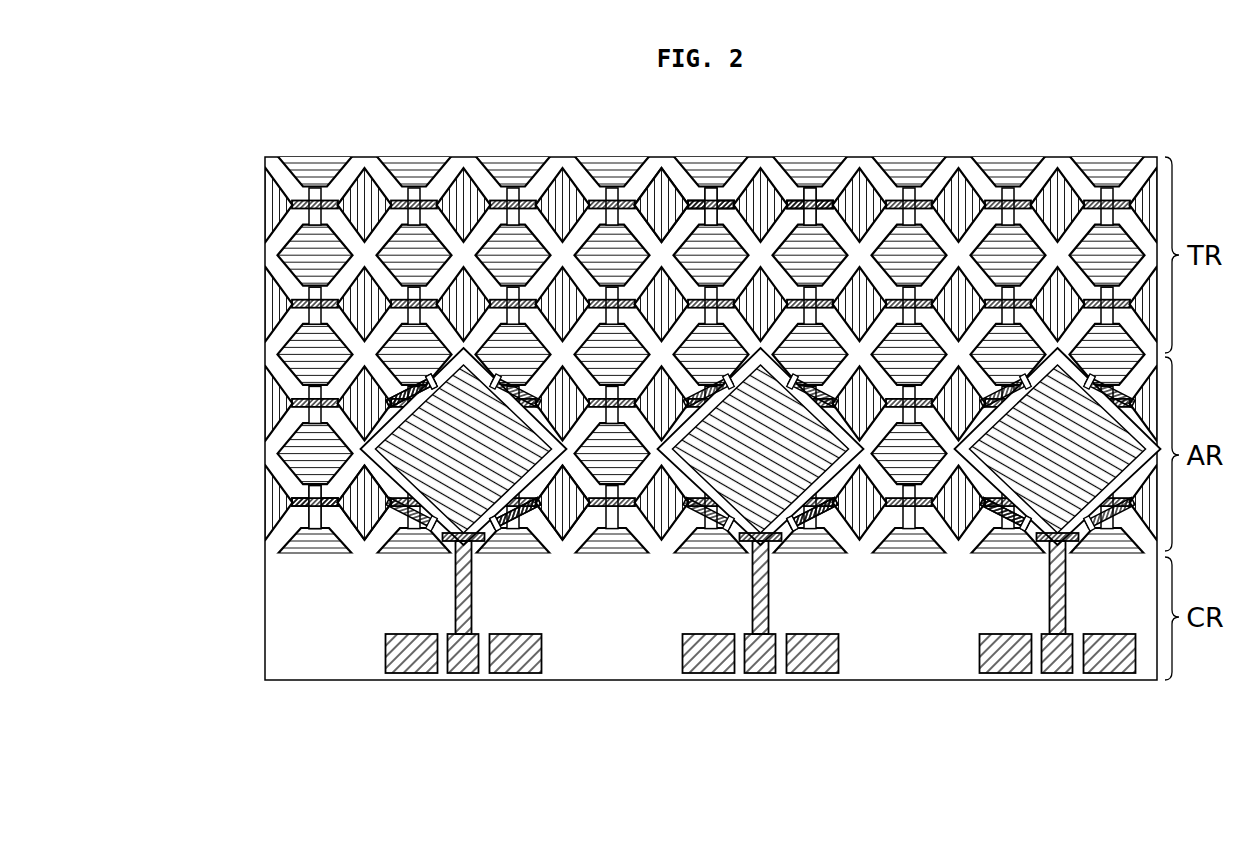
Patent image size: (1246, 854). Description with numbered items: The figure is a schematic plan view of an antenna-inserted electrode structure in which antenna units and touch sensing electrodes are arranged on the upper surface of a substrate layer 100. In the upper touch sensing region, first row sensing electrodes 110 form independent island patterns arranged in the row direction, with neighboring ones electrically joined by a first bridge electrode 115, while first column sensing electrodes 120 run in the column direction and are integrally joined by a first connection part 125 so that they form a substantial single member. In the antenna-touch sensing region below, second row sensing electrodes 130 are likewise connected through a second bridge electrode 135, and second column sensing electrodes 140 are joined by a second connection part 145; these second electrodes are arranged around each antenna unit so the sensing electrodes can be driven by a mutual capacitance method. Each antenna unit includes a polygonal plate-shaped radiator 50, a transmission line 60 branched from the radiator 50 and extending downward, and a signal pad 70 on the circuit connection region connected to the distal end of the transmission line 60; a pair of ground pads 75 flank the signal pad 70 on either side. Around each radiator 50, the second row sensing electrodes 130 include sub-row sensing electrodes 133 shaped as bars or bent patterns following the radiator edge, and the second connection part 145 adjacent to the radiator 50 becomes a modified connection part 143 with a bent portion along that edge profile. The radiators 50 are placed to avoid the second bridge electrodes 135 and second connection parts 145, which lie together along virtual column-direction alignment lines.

The substrate layer 100 is at (287, 653).
The first row sensing electrodes 110 is at (664, 180).
The first bridge electrode 115 is at (822, 196).
The first column sensing electrodes 120 is at (810, 170).
The first connection part 125 is at (727, 200).
The second row sensing electrodes 130 is at (365, 520).
The sub-row sensing electrode 133 is at (433, 383).
The second bridge electrode 135 is at (583, 520).
The second column sensing electrodes 140 is at (303, 548).
The modified connection part 143 is at (873, 520).
The second connection part 145 is at (303, 522).
The radiator 50 is at (687, 520).
The transmission line 60 is at (755, 593).
The signal pad 70 is at (1053, 667).
The ground pads 75 is at (1003, 667).